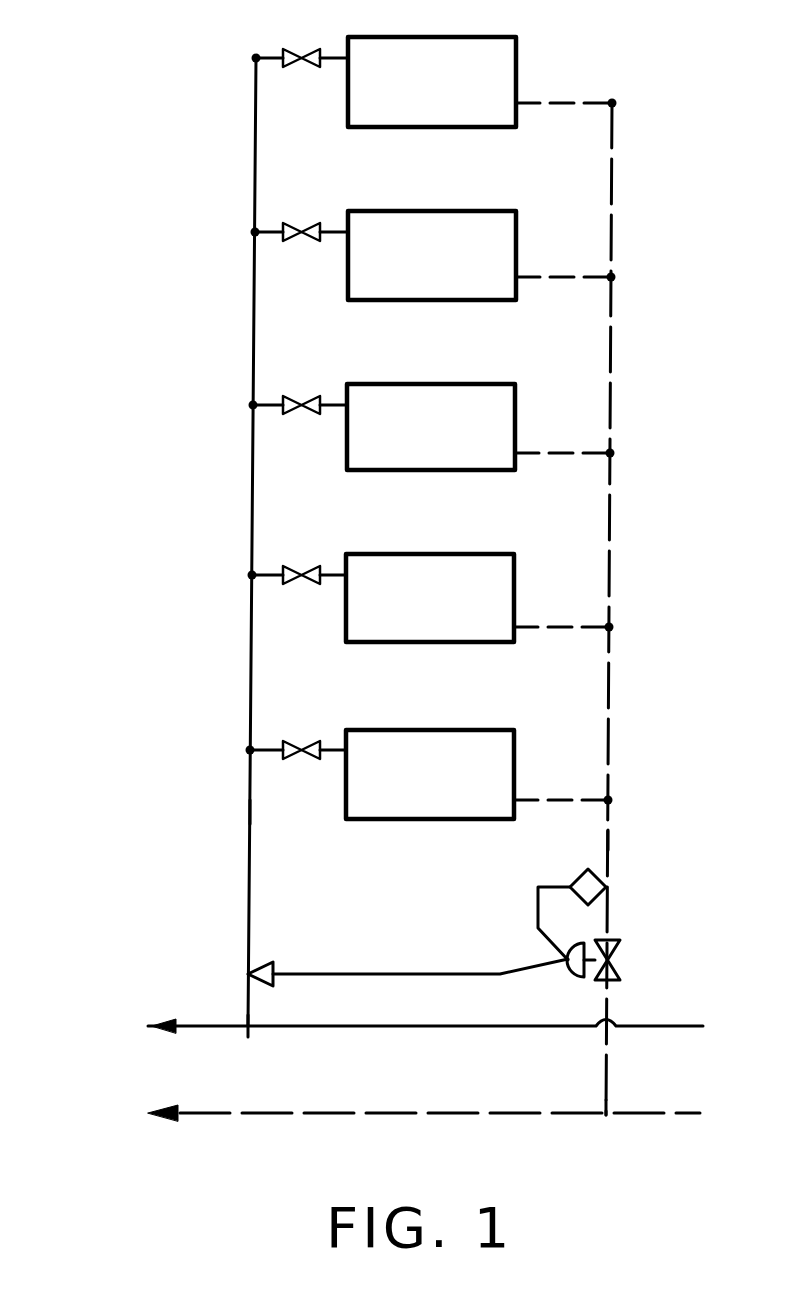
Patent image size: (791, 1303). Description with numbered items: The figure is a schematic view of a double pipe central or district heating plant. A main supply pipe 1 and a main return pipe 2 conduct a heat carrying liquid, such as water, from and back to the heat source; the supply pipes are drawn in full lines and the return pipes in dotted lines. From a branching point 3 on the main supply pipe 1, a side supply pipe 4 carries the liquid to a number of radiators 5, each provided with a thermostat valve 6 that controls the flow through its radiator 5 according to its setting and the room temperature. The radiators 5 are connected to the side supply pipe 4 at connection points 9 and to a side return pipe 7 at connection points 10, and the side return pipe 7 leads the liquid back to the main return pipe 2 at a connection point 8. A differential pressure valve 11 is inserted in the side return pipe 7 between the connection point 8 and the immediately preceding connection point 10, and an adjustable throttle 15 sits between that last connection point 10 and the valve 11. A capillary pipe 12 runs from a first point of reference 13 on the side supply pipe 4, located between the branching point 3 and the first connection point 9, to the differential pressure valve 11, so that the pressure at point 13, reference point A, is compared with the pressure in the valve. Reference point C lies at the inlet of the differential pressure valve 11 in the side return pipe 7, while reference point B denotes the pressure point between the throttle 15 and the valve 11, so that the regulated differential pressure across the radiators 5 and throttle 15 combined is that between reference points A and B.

The main supply pipe 1 is at (384, 1027).
The main return pipe 2 is at (320, 1112).
The branching point 3 is at (248, 1028).
The side supply pipe 4 is at (250, 872).
The radiator 5 is at (457, 48).
The thermostat valve 6 is at (302, 58).
The side return pipe 7 is at (610, 515).
The connection point 8 is at (606, 1116).
The connection point 9 is at (256, 58).
The connection point 10 is at (613, 103).
The differential pressure valve 11 is at (634, 955).
The pipe 12 is at (385, 974).
The first point of reference 13 is at (248, 974).
The throttle 15 is at (612, 886).
The reference point A is at (250, 812).
The reference point B is at (535, 910).
The reference point C is at (608, 840).